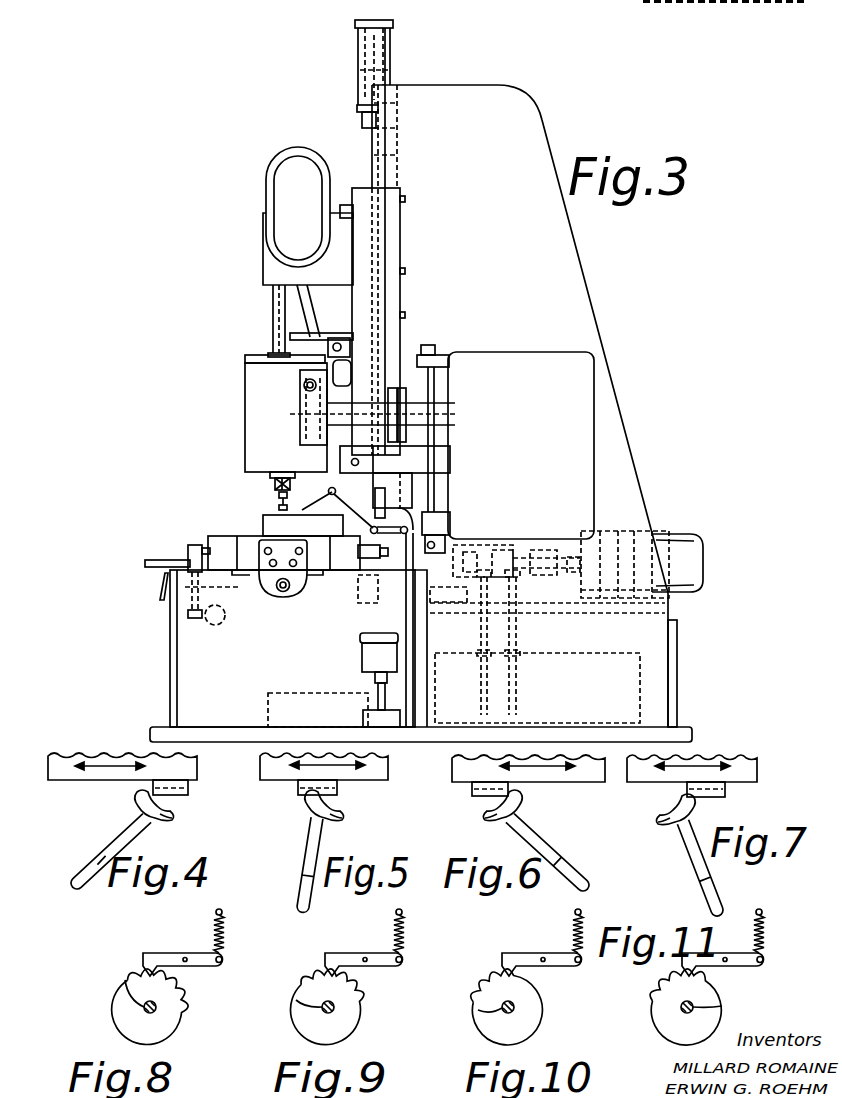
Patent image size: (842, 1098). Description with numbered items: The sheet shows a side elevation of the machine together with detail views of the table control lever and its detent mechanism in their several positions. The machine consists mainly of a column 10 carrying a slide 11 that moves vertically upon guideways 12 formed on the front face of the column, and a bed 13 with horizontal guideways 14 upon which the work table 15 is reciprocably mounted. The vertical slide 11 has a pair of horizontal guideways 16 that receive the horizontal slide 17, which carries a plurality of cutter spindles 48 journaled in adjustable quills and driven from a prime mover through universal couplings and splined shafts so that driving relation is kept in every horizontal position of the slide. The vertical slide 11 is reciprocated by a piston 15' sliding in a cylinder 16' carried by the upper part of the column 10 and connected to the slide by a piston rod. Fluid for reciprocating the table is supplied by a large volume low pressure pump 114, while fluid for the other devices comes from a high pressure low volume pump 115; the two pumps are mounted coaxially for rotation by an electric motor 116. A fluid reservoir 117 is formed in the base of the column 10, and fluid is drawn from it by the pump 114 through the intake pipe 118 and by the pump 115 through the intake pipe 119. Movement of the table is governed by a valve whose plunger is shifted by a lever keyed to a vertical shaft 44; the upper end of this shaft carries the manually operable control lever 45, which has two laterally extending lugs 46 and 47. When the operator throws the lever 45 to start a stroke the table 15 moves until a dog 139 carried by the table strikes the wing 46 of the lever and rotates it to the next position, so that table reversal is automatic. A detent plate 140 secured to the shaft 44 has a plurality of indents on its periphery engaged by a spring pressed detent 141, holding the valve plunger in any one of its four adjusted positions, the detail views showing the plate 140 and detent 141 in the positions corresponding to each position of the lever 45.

In FIG. 3, the column 10 is at (580, 305).
In FIG. 3, the slide 11 is at (365, 195).
In FIG. 3, the guideways 12 is at (362, 120).
In FIG. 3, the bed 13 is at (178, 668).
In FIG. 3, the horizontal guideways 14 is at (318, 578).
In FIG. 3, the work table 15 is at (300, 608).
In FIG. 3, the piston 15' is at (346, 67).
In FIG. 3, the horizontal guideways 16 is at (400, 268).
In FIG. 3, the cylinder 16' is at (396, 62).
In FIG. 3, the horizontal slide 17 is at (252, 415).
In FIG. 8, the vertical shaft 44 is at (128, 982).
In FIG. 9, the vertical shaft 44 is at (298, 1000).
In FIG. 10, the vertical shaft 44 is at (478, 1010).
In FIG. 11, the vertical shaft 44 is at (722, 1006).
In FIG. 3, the control lever 45 is at (155, 560).
In FIG. 4, the control lever 45 is at (95, 866).
In FIG. 5, the control lever 45 is at (302, 876).
In FIG. 6, the control lever 45 is at (560, 866).
In FIG. 7, the control lever 45 is at (710, 880).
In FIG. 4, the lug 46 is at (136, 796).
In FIG. 5, the lug 46 is at (306, 798).
In FIG. 6, the lug 46 is at (487, 820).
In FIG. 7, the lug 46 is at (660, 808).
In FIG. 4, the lug 47 is at (172, 820).
In FIG. 5, the lug 47 is at (342, 820).
In FIG. 6, the lug 47 is at (520, 796).
In FIG. 7, the lug 47 is at (700, 806).
In FIG. 3, the cutter spindles 48 is at (272, 483).
In FIG. 3, the low pressure pump 114 is at (480, 562).
In FIG. 3, the high pressure pump 115 is at (508, 560).
In FIG. 3, the electric motor 116 is at (690, 545).
In FIG. 3, the fluid reservoir 117 is at (600, 656).
In FIG. 3, the intake pipe 118 is at (480, 637).
In FIG. 3, the intake pipe 119 is at (515, 636).
In FIG. 4, the dog 139 is at (190, 794).
In FIG. 5, the dog 139 is at (338, 792).
In FIG. 6, the dog 139 is at (470, 790).
In FIG. 7, the dog 139 is at (725, 790).
In FIG. 8, the detent plate 140 is at (120, 1012).
In FIG. 9, the detent plate 140 is at (300, 1014).
In FIG. 10, the detent plate 140 is at (482, 1024).
In FIG. 11, the detent plate 140 is at (708, 1022).
In FIG. 8, the spring pressed detent 141 is at (158, 955).
In FIG. 9, the spring pressed detent 141 is at (378, 968).
In FIG. 10, the spring pressed detent 141 is at (555, 968).
In FIG. 11, the spring pressed detent 141 is at (738, 968).